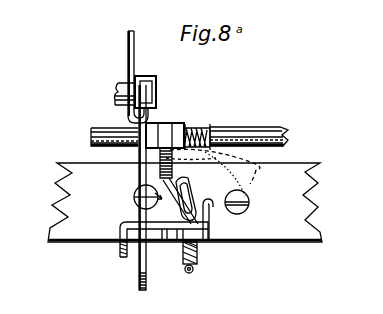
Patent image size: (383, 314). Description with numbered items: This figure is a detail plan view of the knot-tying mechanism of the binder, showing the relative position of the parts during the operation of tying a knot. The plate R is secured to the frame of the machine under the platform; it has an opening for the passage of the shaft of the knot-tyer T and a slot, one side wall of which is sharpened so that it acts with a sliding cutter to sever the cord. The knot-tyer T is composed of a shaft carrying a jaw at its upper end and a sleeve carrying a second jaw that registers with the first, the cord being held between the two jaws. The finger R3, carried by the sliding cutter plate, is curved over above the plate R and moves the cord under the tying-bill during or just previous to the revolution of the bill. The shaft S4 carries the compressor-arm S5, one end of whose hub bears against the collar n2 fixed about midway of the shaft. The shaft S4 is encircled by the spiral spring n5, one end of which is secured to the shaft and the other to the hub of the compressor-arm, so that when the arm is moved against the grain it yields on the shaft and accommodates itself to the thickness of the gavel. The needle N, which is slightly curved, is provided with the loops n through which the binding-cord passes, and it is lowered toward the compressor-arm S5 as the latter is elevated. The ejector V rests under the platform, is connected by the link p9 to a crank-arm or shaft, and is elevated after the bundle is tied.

The link p9 is at (135, 60).
The collar n2 is at (166, 122).
The spiral spring n5 is at (212, 117).
The shaft S4 is at (238, 130).
The compressor-arm S5 is at (192, 156).
The ejector V is at (139, 180).
The finger R3 is at (124, 222).
The knot-tyer T is at (186, 208).
The plate R is at (185, 195).
The needle N is at (198, 258).
The loops n is at (195, 272).